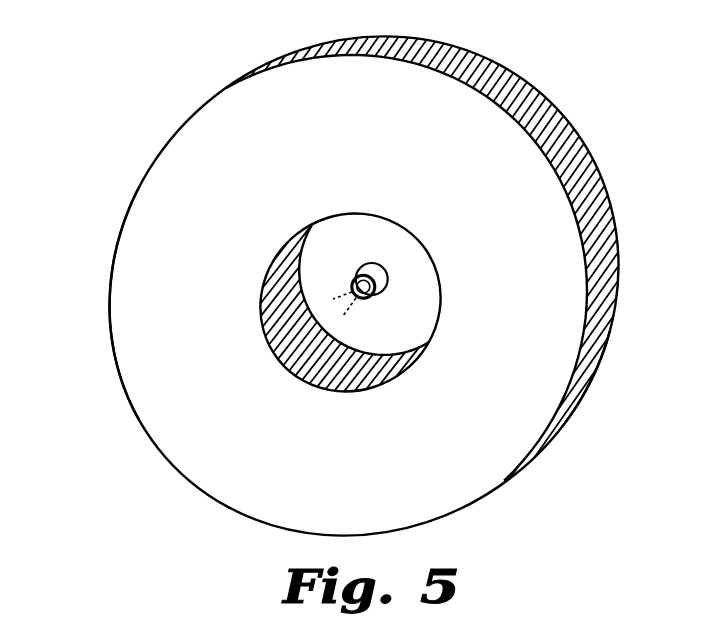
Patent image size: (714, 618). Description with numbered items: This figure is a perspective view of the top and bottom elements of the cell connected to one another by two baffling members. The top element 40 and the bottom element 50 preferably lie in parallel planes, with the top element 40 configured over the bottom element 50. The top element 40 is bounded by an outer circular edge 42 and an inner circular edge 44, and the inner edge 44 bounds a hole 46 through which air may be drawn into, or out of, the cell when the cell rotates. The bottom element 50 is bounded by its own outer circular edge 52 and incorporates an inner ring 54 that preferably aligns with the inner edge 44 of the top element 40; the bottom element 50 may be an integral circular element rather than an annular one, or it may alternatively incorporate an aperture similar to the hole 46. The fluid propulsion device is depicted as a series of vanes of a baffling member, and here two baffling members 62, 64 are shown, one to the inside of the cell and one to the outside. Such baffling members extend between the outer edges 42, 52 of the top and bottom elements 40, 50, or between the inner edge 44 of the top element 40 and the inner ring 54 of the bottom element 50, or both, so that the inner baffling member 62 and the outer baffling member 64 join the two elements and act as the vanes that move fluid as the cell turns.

The top element 40 is at (162, 185).
The outer circular edge 42 is at (110, 262).
The inner circular edge 44 is at (270, 284).
The hole 46 is at (358, 252).
The bottom element 50 is at (589, 371).
The outer circular edge 52 is at (584, 140).
The inner ring 54 is at (343, 337).
The baffling member 62 is at (387, 377).
The baffling member 64 is at (529, 85).